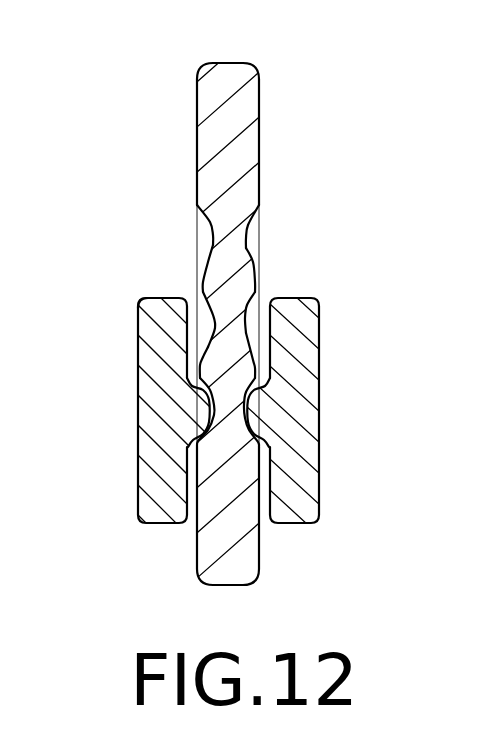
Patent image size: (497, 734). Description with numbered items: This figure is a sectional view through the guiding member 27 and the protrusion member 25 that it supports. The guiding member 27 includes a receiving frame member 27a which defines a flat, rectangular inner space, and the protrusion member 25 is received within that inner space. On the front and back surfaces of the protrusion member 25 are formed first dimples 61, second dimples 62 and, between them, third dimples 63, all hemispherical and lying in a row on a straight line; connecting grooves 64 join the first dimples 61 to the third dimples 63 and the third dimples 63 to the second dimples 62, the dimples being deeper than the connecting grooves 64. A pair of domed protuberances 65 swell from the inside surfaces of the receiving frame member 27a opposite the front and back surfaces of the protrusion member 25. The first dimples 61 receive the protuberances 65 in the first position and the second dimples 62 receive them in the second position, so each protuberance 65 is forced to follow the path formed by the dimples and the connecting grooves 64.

The protrusion member 25 is at (259, 80).
The guiding member 27 is at (140, 522).
The receiving frame member 27a is at (139, 301).
The first dimples 61 is at (208, 405).
The second dimples 62 is at (203, 218).
The third dimples 63 is at (208, 343).
The connecting grooves 64 is at (202, 283).
The domed protuberances 65 is at (190, 445).